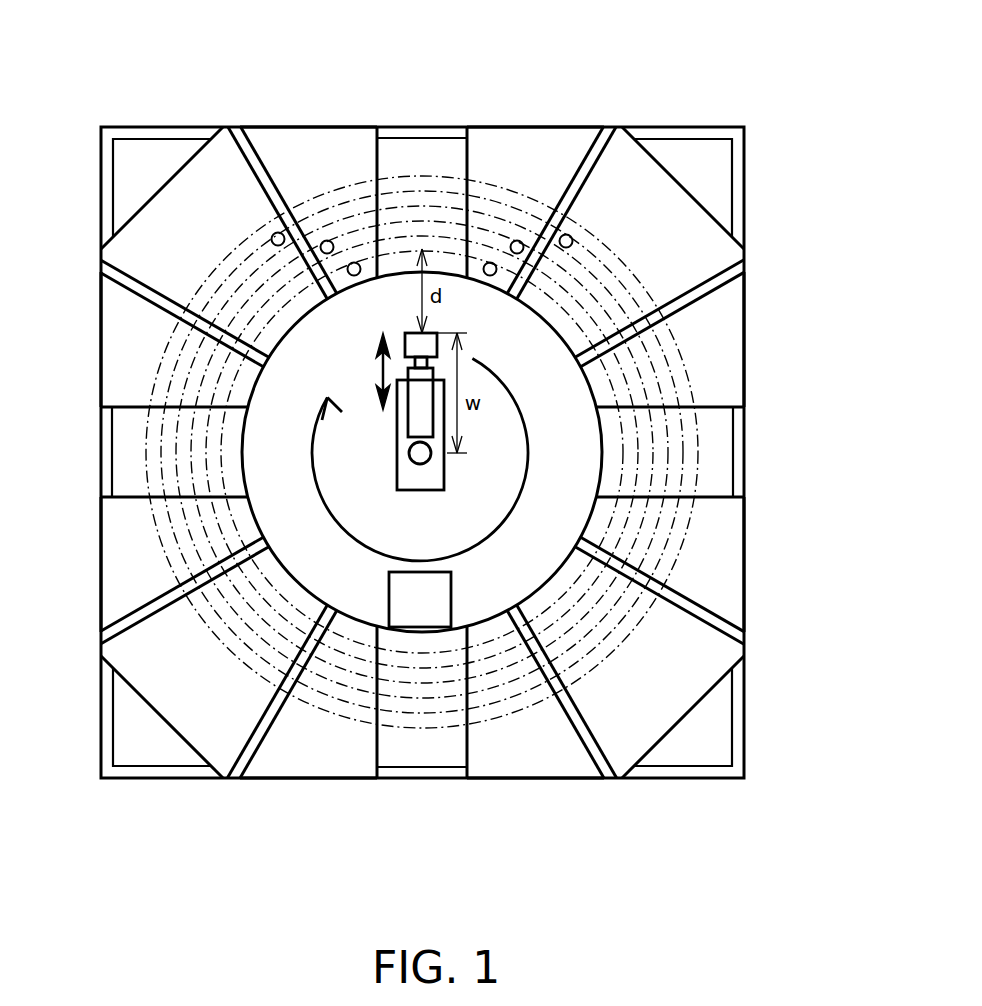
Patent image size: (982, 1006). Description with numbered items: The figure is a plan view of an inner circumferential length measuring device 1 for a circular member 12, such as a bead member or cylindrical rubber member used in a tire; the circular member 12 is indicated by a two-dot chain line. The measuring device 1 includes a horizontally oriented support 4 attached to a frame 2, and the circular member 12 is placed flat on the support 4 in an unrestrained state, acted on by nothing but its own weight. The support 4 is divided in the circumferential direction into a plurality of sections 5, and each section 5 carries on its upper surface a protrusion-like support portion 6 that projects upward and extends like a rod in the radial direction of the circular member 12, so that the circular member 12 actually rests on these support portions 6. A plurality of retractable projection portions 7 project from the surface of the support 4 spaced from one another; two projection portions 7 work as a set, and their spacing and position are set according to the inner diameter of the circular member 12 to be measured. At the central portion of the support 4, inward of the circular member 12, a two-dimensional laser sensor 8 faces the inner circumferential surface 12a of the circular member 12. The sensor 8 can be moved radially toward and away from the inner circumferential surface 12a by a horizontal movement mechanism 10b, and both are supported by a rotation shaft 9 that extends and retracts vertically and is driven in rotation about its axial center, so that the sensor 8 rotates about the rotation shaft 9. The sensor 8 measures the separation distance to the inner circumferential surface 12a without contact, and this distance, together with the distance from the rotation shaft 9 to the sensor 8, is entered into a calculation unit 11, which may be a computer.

The measuring device 1 is at (700, 110).
The frame 2 is at (160, 128).
The support 4 is at (360, 128).
The section 5 is at (297, 140).
The protrusion-like support portion 6 is at (148, 292).
The projection portion 7 is at (272, 234).
The two-dimensional sensor 8 is at (414, 333).
The rotation shaft 9 is at (416, 458).
The horizontal movement mechanism 10b is at (417, 420).
The calculation unit 11 is at (397, 600).
The circular member 12 is at (157, 477).
The inner circumferential surface 12a is at (237, 518).